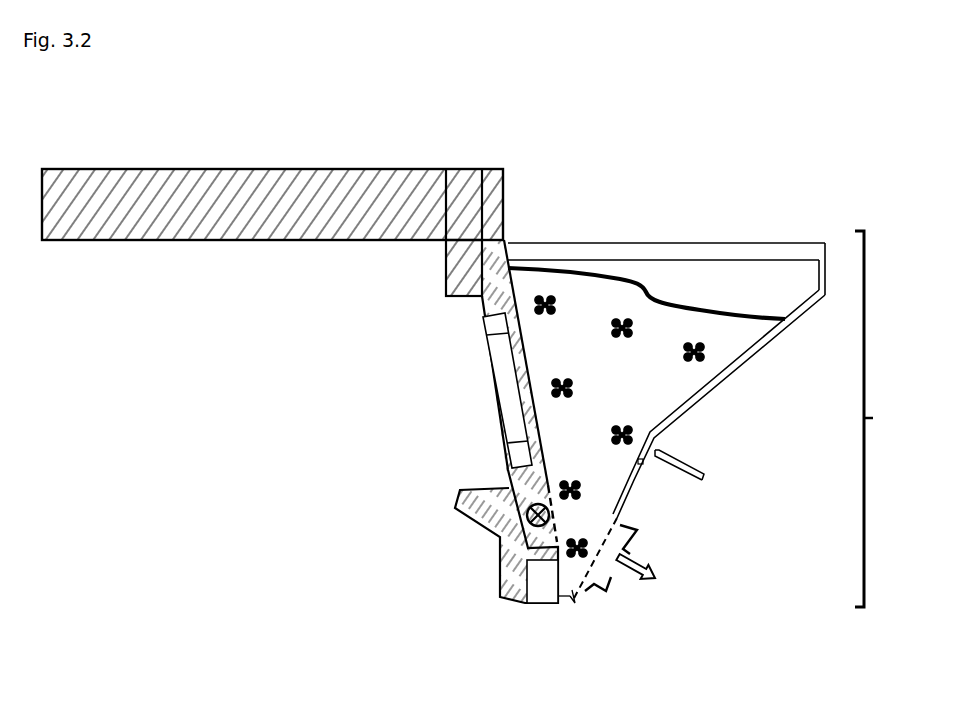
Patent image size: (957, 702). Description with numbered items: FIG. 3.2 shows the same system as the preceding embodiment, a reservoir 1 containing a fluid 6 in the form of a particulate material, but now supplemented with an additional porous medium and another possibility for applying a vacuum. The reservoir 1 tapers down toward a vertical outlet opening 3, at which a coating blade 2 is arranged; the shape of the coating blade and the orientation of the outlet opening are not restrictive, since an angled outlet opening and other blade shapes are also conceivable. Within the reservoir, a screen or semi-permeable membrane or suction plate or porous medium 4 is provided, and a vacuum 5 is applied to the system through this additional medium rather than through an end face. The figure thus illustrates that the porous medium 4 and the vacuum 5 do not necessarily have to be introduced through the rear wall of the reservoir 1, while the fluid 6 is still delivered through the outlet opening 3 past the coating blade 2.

The reservoir 1 is at (704, 419).
The coating blade 2 is at (530, 616).
The outlet opening 3 is at (565, 619).
The screen or semi-permeable membrane or suction plate or porous medium 4 is at (570, 511).
The vacuum 5 is at (518, 496).
The fluid (particulate material) 6 is at (739, 349).